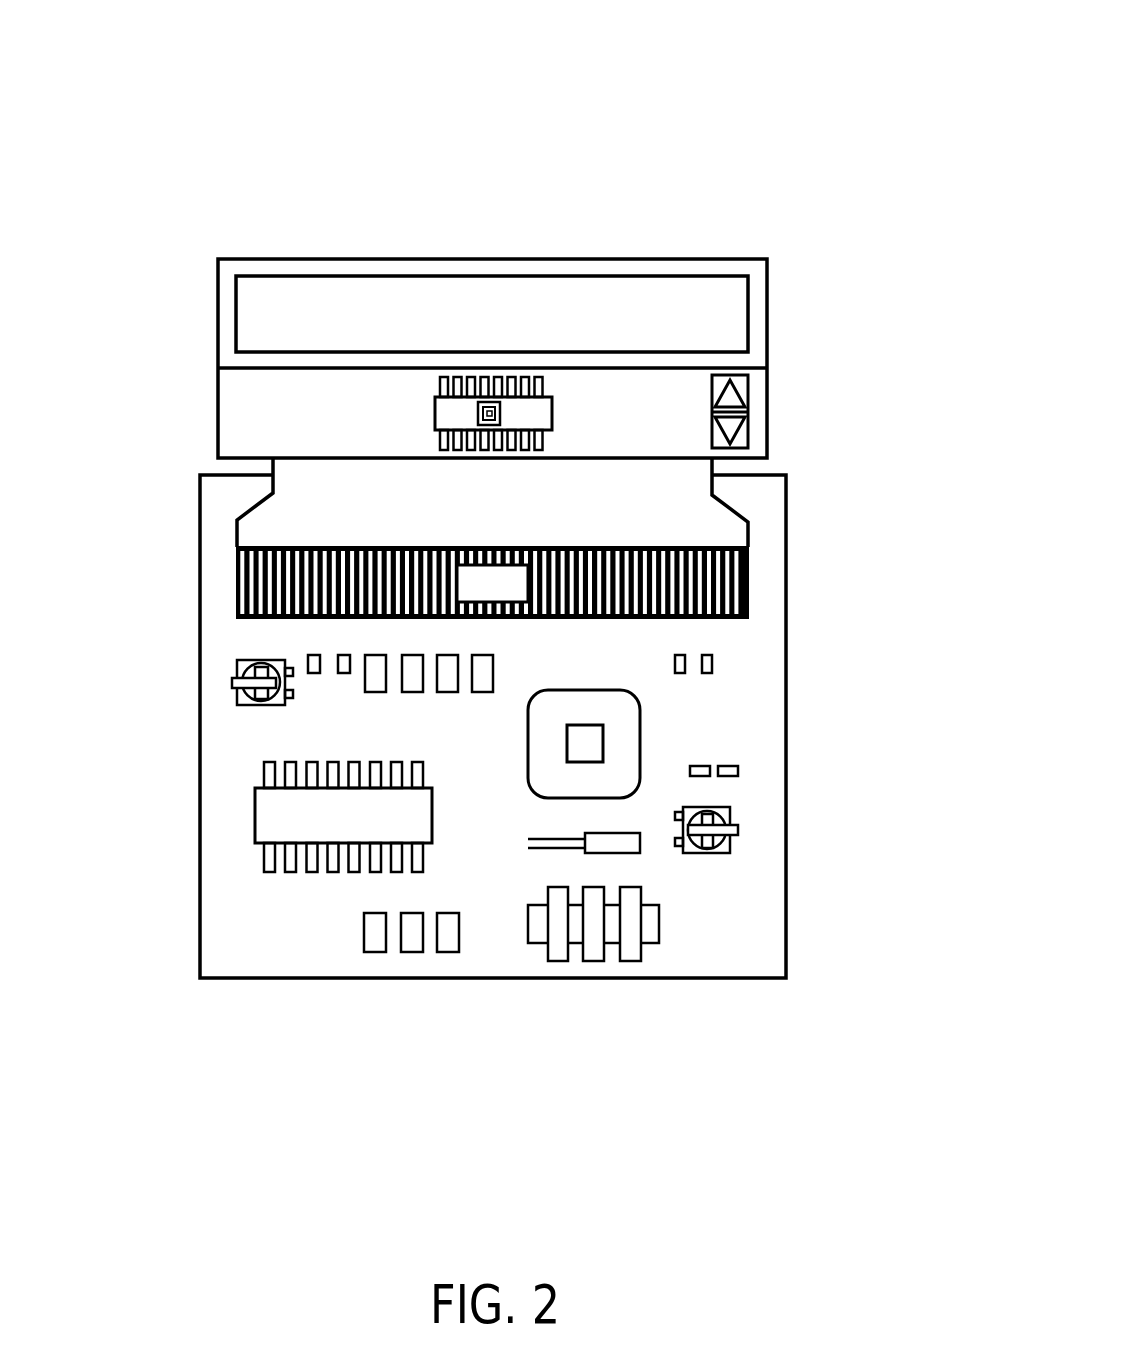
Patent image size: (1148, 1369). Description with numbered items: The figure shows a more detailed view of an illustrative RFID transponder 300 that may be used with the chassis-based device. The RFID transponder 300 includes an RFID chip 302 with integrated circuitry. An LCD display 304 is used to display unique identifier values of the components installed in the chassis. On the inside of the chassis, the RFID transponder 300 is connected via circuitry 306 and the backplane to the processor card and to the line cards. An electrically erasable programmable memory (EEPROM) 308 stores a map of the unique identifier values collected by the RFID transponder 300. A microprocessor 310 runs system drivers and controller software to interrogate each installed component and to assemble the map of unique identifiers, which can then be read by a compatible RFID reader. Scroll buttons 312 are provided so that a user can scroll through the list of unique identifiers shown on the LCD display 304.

The RFID transponder 300 is at (426, 105).
The RFID chip 302 is at (435, 415).
The LCD display 304 is at (728, 297).
The circuitry 306 is at (683, 492).
The electrically erasable programmable memory (EEPROM) 308 is at (273, 817).
The microprocessor 310 is at (623, 717).
The scroll buttons 312 is at (745, 388).